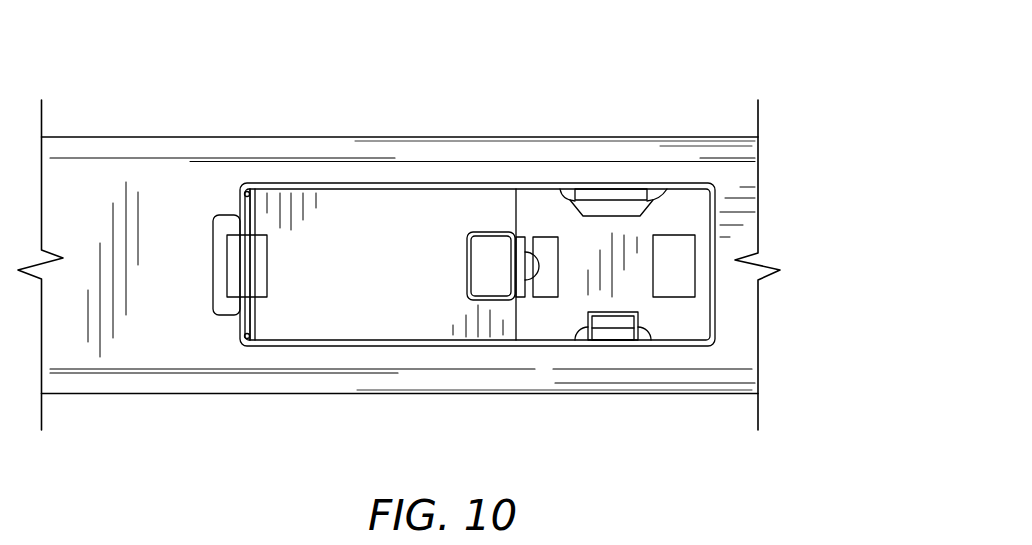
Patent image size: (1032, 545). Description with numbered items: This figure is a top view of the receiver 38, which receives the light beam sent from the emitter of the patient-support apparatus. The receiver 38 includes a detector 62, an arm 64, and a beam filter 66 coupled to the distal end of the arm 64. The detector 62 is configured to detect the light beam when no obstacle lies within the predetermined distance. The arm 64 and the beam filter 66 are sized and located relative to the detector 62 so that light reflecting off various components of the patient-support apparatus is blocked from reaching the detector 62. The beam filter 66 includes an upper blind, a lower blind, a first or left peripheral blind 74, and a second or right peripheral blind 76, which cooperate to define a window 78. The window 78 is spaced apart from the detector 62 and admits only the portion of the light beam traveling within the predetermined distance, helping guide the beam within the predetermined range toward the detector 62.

The receiver 38 is at (757, 78).
The detector 62 is at (672, 178).
The arm 64 is at (415, 177).
The beam filter 66 is at (235, 182).
The first peripheral blind 74 is at (263, 188).
The second peripheral blind 76 is at (248, 347).
The window 78 is at (237, 265).